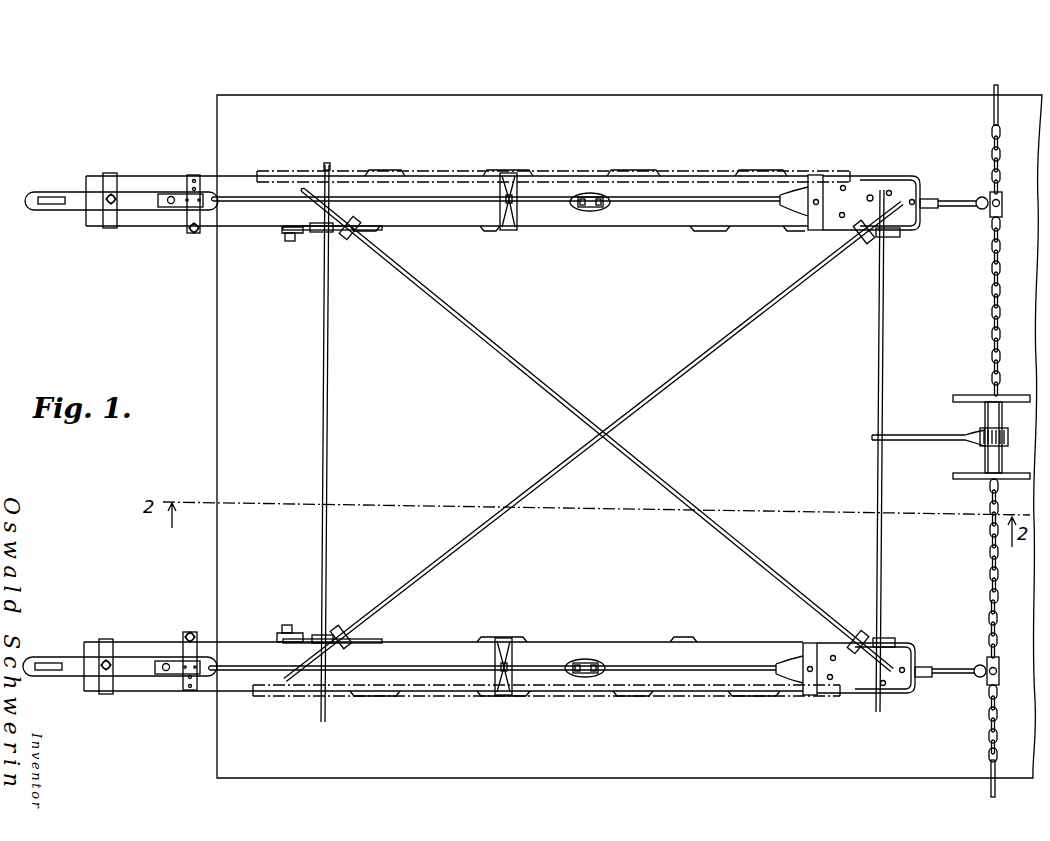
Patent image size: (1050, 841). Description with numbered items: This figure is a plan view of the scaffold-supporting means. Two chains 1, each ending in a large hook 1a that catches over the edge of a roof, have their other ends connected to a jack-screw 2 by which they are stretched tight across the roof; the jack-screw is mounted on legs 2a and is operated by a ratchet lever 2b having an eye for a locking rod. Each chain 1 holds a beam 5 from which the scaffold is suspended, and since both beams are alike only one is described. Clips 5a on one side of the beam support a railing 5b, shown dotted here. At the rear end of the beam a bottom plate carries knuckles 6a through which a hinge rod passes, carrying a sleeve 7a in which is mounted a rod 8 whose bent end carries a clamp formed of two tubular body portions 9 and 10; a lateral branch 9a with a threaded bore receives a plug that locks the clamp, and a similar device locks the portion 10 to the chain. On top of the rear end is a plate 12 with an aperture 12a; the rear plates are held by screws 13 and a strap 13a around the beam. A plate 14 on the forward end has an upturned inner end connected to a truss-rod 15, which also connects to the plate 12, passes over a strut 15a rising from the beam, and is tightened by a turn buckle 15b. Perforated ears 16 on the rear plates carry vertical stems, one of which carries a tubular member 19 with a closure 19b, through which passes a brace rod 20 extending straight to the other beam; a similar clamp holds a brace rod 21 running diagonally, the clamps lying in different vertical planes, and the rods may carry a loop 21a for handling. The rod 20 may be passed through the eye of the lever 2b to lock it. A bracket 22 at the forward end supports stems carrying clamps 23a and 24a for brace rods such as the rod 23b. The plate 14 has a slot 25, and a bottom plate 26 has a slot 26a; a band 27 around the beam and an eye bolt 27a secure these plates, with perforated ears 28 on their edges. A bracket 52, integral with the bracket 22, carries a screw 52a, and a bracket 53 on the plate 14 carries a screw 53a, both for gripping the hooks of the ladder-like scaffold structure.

The chain 1 is at (992, 292).
The large hook 1a is at (998, 90).
The jack-screw 2 is at (985, 408).
The legs 2a is at (1020, 395).
The ratchet lever 2b is at (920, 441).
The beam 5 is at (681, 228).
The clips 5a is at (375, 170).
The railing 5b is at (600, 170).
The knuckles 6a is at (920, 186).
The sleeve 7a is at (936, 203).
The rod 8 is at (960, 201).
The tubular body portion 9 is at (982, 209).
The branch 9a is at (1000, 201).
The tubular body portion 10 is at (1003, 210).
The plate 12 is at (862, 186).
The aperture 12a is at (912, 199).
The fastening means 13 is at (842, 213).
The strap 13a is at (808, 228).
The plate 14 is at (130, 202).
The truss-rod 15 is at (418, 196).
The strut 15a is at (514, 200).
The turn buckle 15b is at (590, 212).
The perforated ears 16 is at (890, 238).
The tubular member 19 is at (846, 248).
The closure 19b is at (856, 236).
The brace rod 20 is at (878, 507).
The brace rod 21 is at (698, 360).
The loop 21a is at (333, 166).
The bracket 22 is at (378, 230).
The clamp 23a is at (320, 234).
The brace rod 23b is at (330, 383).
The clamp 24a is at (350, 240).
The slot 25 is at (52, 204).
The plate 26 is at (32, 677).
The slot 26a is at (45, 663).
The band 27 is at (117, 180).
The eye bolt 27a is at (111, 196).
The perforated ears 28 is at (198, 233).
The bracket 52 is at (282, 230).
The screw 52a is at (290, 241).
The bracket 53 is at (165, 207).
The screw 53a is at (174, 208).